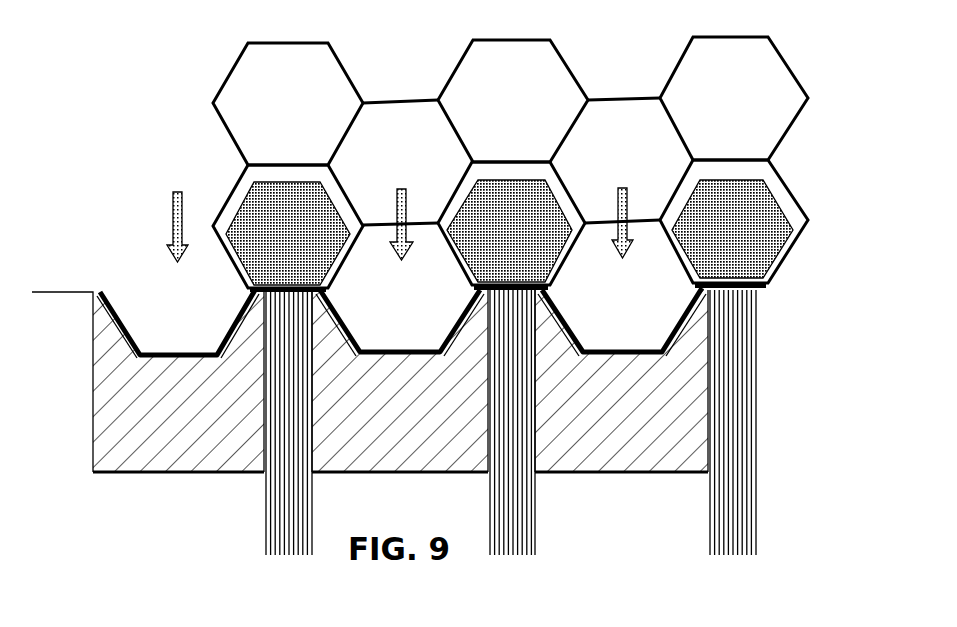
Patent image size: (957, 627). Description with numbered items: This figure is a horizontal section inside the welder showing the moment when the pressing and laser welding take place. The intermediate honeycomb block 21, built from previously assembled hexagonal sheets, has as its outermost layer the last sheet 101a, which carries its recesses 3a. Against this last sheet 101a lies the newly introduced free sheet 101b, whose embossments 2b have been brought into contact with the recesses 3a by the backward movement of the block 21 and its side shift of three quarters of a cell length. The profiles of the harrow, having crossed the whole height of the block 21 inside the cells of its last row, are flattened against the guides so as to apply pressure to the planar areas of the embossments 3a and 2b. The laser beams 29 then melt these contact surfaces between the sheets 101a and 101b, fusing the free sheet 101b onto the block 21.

The intermediate honeycomb block 21 is at (572, 68).
The last sheet of the block 101a is at (790, 253).
The recesses (embossments) of the last sheet 3a is at (288, 283).
The embossments of the free sheet 2b is at (289, 297).
The laser beams 29 is at (275, 492).
The free sheet 101b is at (133, 332).